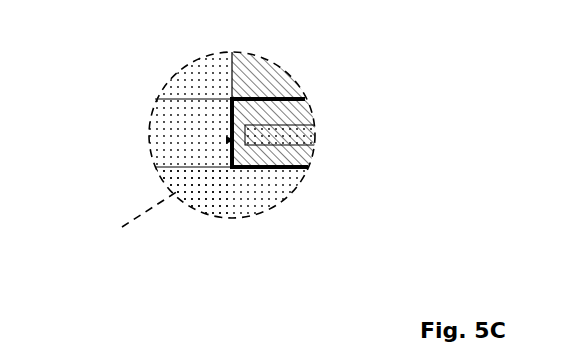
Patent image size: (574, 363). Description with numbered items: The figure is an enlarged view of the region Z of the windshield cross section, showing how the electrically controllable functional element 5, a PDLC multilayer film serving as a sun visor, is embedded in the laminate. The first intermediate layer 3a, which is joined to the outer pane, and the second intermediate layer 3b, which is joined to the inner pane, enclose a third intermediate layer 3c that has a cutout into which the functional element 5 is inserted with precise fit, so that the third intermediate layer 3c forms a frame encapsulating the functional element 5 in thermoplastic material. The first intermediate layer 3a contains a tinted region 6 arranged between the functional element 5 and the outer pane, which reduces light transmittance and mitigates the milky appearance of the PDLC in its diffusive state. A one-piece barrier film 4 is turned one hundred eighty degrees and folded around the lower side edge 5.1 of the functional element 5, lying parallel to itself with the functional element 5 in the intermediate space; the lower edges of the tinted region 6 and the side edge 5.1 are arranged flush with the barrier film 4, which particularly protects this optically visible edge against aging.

The first intermediate layer 3a is at (207, 82).
The second intermediate layer 3b is at (268, 197).
The third intermediate layer 3c is at (167, 119).
The barrier film 4 is at (231, 98).
The functional element 5 is at (290, 135).
The side edge 5.1 is at (232, 140).
The tinted region 6 is at (273, 73).
The region Z is at (130, 225).